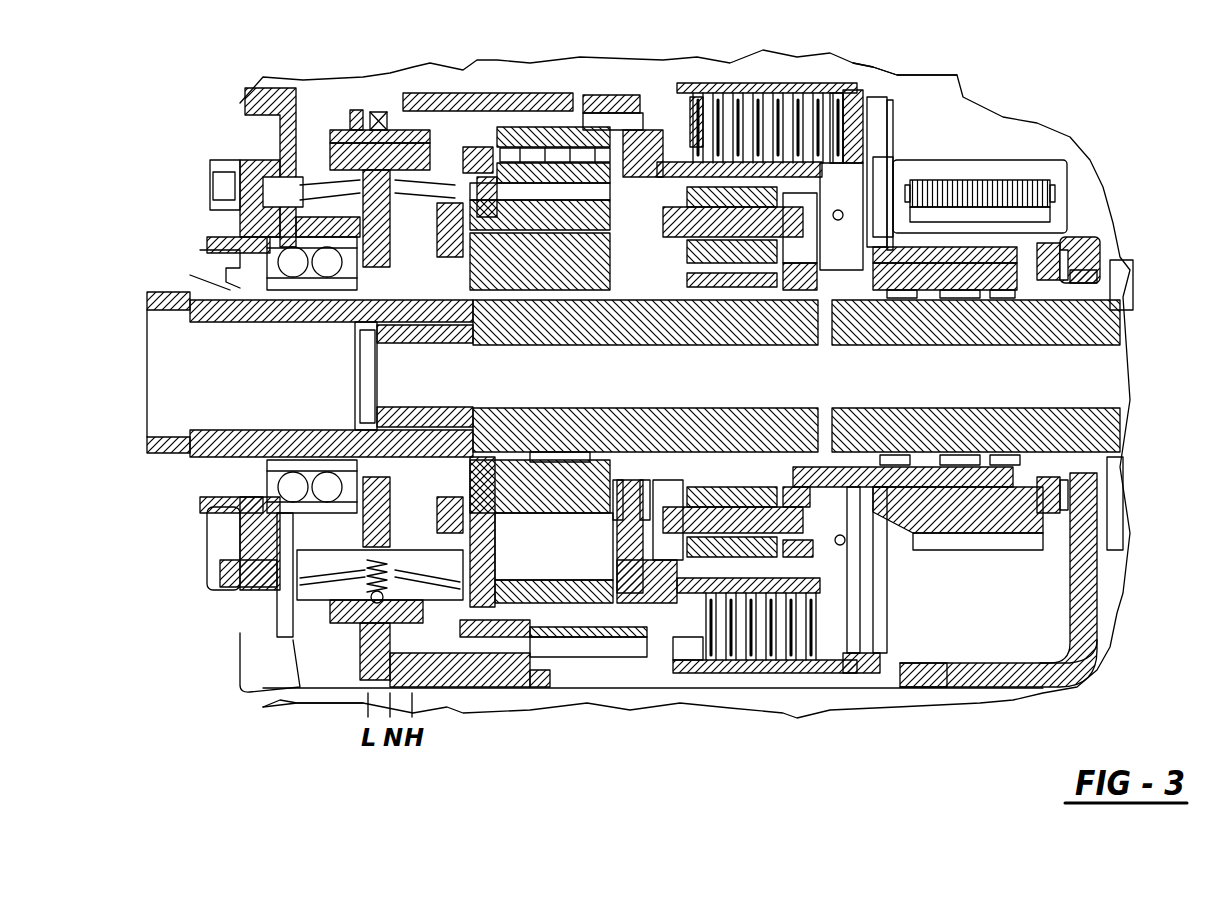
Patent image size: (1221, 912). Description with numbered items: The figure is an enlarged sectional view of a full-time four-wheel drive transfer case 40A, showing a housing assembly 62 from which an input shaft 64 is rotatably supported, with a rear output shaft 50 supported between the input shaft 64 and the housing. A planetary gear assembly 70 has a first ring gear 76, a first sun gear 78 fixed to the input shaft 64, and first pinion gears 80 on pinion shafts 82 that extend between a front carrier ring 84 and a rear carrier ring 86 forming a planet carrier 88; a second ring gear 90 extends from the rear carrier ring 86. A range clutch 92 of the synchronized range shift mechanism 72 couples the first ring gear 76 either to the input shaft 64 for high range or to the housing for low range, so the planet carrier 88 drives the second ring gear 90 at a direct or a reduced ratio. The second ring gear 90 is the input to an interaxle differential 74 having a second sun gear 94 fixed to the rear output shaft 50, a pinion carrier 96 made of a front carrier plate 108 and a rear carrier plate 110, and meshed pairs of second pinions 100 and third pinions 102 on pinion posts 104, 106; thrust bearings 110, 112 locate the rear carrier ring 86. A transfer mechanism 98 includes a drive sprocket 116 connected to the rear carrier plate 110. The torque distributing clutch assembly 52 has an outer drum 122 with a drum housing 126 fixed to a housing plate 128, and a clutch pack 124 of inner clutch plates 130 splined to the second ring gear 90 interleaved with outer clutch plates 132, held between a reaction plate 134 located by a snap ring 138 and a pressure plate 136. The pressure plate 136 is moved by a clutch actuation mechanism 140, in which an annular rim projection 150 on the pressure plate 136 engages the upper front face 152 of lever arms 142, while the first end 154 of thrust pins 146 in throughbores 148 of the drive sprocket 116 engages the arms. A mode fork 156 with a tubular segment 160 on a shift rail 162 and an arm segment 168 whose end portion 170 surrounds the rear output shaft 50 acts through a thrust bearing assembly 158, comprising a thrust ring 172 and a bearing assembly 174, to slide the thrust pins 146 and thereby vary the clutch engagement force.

The transfer case 40A is at (1095, 145).
The rear output shaft 50 is at (530, 340).
The torque distributing clutch assembly 52 is at (882, 88).
The housing assembly 62 is at (280, 95).
The input shaft 64 is at (158, 293).
The planetary gear assembly 70 is at (530, 77).
The synchronized range shift mechanism 72 is at (330, 97).
The interaxle differential 74 is at (672, 300).
The first ring gear 76 is at (600, 112).
The first sun gear 78 is at (566, 272).
The first pinion gears 80 is at (570, 152).
The pinion shafts 82 is at (570, 190).
The front carrier ring 84 is at (560, 127).
The rear carrier ring 86 is at (617, 556).
The planet carrier 88 is at (520, 580).
The second ring gear 90 is at (690, 162).
The range clutch 92 is at (300, 640).
The second sun gear 94 is at (735, 288).
The pinion carrier 96 is at (795, 190).
The transfer mechanism 98 is at (1015, 182).
The second pinions 100 is at (720, 487).
The third pinions 102 is at (751, 210).
The pinion post 104 is at (751, 532).
The pinion post 106 is at (751, 234).
The front carrier plate 108 is at (650, 185).
The rear carrier plate 110 is at (618, 480).
The thrust bearing 112 is at (644, 480).
The drive sprocket 116 is at (973, 510).
The outer drum 122 is at (784, 92).
The clutch pack 124 is at (812, 62).
The drum housing 126 is at (835, 85).
The housing plate 128 is at (880, 138).
The inner clutch plates 130 is at (860, 185).
The outer clutch plates 132 is at (765, 110).
The reaction plate 134 is at (683, 640).
The pressure plate 136 is at (870, 97).
The snap ring 138 is at (685, 110).
The pin 140 is at (838, 220).
The lever arms 142 is at (940, 165).
The thrust pins 146 is at (930, 250).
The throughbores 148 is at (960, 290).
The annular rim projection 150 is at (880, 115).
The upper front face 152 is at (895, 160).
The first end 154 is at (888, 298).
The mode fork 156 is at (1000, 650).
The thrust bearing assembly 158 is at (1048, 473).
The tubular segment 160 is at (940, 662).
The shift rail 162 is at (298, 705).
The arm segment 168 is at (1072, 588).
The end portion 170 is at (1085, 238).
The thrust ring 172 is at (1075, 285).
The bearing assembly 174 is at (1070, 270).